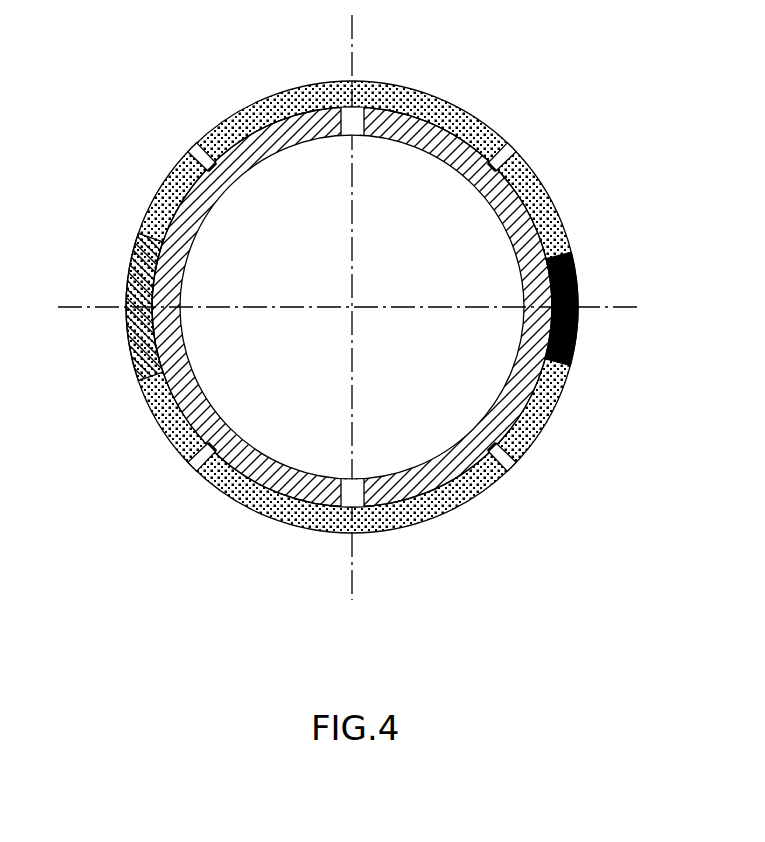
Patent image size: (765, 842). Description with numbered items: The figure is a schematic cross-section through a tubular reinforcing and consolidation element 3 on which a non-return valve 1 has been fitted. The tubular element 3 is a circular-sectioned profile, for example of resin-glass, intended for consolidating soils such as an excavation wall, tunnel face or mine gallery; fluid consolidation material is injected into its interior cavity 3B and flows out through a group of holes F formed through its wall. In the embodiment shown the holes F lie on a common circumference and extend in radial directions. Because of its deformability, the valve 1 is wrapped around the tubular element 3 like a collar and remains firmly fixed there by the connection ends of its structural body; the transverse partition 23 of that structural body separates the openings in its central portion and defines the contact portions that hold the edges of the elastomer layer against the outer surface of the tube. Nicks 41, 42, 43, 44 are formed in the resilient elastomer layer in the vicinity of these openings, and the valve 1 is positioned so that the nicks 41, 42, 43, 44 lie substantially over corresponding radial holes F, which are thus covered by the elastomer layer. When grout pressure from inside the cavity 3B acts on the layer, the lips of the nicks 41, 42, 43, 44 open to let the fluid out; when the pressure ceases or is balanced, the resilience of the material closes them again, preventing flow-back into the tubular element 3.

The non-return valve 1 is at (158, 428).
The tubular reinforcing and consolidation element 3 is at (552, 410).
The cavity 3B is at (447, 392).
The transverse partition 23 is at (130, 345).
The nick 41 is at (505, 148).
The nick 42 is at (207, 148).
The nick 43 is at (205, 468).
The nick 44 is at (503, 473).
The radial hole F is at (360, 112).